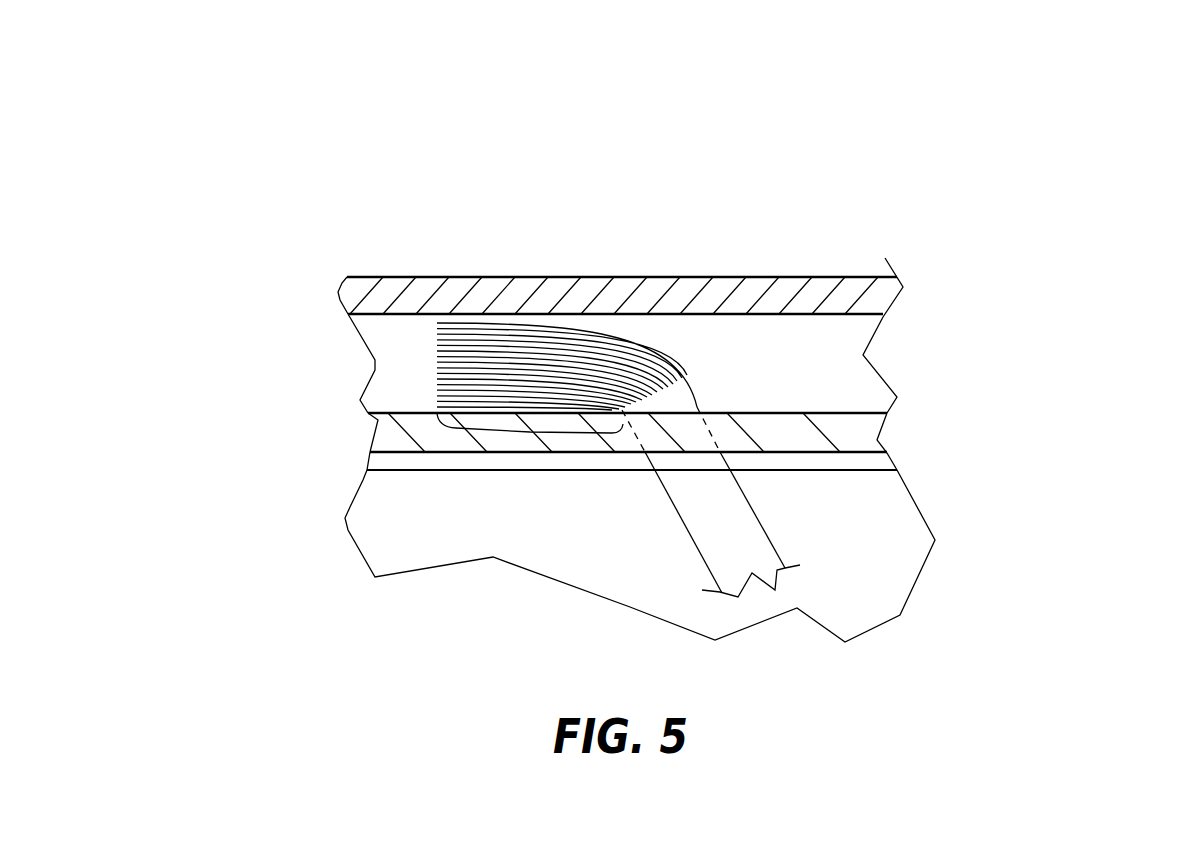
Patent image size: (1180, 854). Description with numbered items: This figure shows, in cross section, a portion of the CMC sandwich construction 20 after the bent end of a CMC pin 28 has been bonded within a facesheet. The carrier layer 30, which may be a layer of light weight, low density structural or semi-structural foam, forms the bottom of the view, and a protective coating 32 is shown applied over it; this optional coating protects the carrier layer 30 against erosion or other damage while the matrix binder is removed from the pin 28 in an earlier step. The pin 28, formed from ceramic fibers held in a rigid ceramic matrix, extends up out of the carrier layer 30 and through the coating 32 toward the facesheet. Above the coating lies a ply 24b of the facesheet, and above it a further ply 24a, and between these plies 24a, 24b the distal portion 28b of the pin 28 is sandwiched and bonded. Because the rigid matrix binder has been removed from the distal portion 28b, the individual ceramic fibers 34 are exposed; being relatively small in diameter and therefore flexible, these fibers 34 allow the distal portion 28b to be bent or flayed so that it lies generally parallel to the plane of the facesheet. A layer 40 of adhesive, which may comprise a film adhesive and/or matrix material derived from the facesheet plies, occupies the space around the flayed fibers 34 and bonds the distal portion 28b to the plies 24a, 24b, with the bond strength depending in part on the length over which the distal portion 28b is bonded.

The CMC sandwich construction 20 is at (902, 204).
The ply 24a is at (375, 297).
The ply 24b is at (370, 445).
The CMC pin 28 is at (710, 522).
The distal portion 28b is at (525, 445).
The carrier layer 30 is at (373, 545).
The protective coating 32 is at (373, 460).
The ceramic fibers 34 is at (588, 347).
The layer of adhesive 40 is at (835, 398).